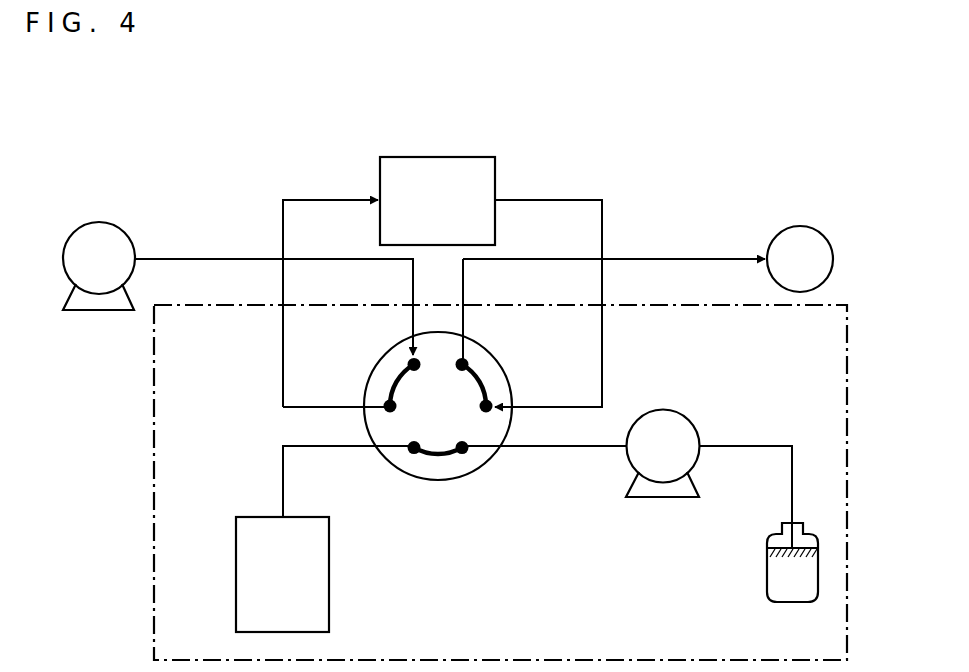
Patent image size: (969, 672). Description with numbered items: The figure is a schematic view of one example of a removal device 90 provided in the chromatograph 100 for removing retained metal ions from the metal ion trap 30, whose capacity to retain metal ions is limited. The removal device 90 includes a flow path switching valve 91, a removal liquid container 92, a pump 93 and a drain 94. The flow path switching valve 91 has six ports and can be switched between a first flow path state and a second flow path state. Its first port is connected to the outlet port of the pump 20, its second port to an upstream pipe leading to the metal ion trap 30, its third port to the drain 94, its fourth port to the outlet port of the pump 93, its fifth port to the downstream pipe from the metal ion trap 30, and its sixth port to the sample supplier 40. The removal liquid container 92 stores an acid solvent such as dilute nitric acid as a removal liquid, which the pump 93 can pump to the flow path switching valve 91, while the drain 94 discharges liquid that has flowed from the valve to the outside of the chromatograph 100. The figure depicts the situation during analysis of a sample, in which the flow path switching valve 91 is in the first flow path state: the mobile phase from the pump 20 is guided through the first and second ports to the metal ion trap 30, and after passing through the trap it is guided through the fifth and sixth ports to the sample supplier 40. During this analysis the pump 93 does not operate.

The chromatograph 100 is at (926, 104).
The pump 20 is at (100, 221).
The metal ion trap 30 is at (438, 157).
The sample supplier 40 is at (800, 226).
The removal device 90 is at (153, 482).
The flow path switching valve 91 is at (437, 480).
The removal liquid container 92 is at (766, 572).
The pump 93 is at (663, 409).
The drain 94 is at (236, 577).